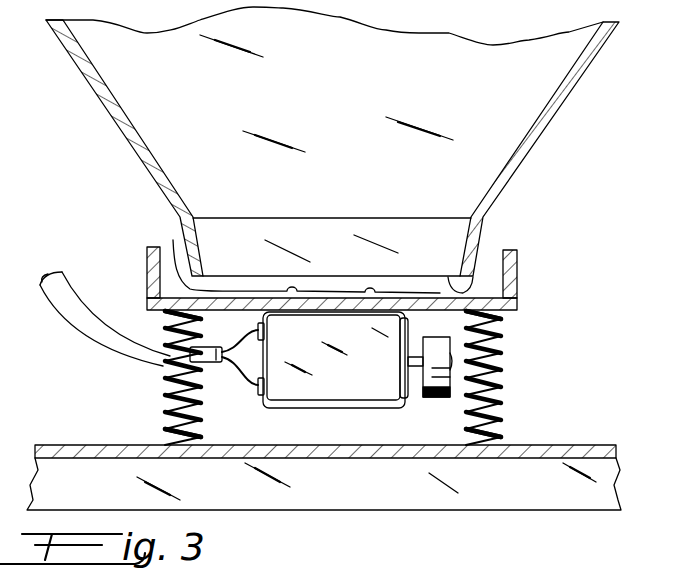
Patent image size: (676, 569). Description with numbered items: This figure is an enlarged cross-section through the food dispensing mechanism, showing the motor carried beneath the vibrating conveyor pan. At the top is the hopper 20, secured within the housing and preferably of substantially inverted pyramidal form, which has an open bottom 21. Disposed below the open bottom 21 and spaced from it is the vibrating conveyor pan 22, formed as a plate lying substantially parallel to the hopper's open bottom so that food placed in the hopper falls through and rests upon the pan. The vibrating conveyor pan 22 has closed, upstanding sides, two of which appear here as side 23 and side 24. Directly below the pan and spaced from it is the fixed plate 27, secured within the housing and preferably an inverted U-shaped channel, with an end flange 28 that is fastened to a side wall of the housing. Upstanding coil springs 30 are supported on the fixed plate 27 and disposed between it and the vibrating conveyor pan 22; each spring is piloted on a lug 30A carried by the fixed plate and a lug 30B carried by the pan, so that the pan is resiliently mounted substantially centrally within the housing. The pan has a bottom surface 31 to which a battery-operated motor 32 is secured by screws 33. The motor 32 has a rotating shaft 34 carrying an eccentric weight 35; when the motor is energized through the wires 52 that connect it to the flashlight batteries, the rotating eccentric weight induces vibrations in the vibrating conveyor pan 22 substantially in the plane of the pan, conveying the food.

The hopper 20 is at (528, 163).
The open bottom 21 is at (478, 298).
The vibrating conveyor pan 22 is at (524, 276).
The closed side 23 is at (147, 273).
The closed side 24 is at (518, 294).
The fixed plate 27 is at (289, 460).
The end flange 28 is at (518, 499).
The coil springs 30 is at (166, 383).
The lug 30A is at (182, 435).
The lug 30B is at (163, 327).
The bottom surface 31 is at (247, 313).
The battery-operated motor 32 is at (305, 386).
The screws 33 is at (173, 242).
The rotating shaft 34 is at (416, 368).
The eccentric weight 35 is at (441, 375).
The wires 52 is at (112, 333).